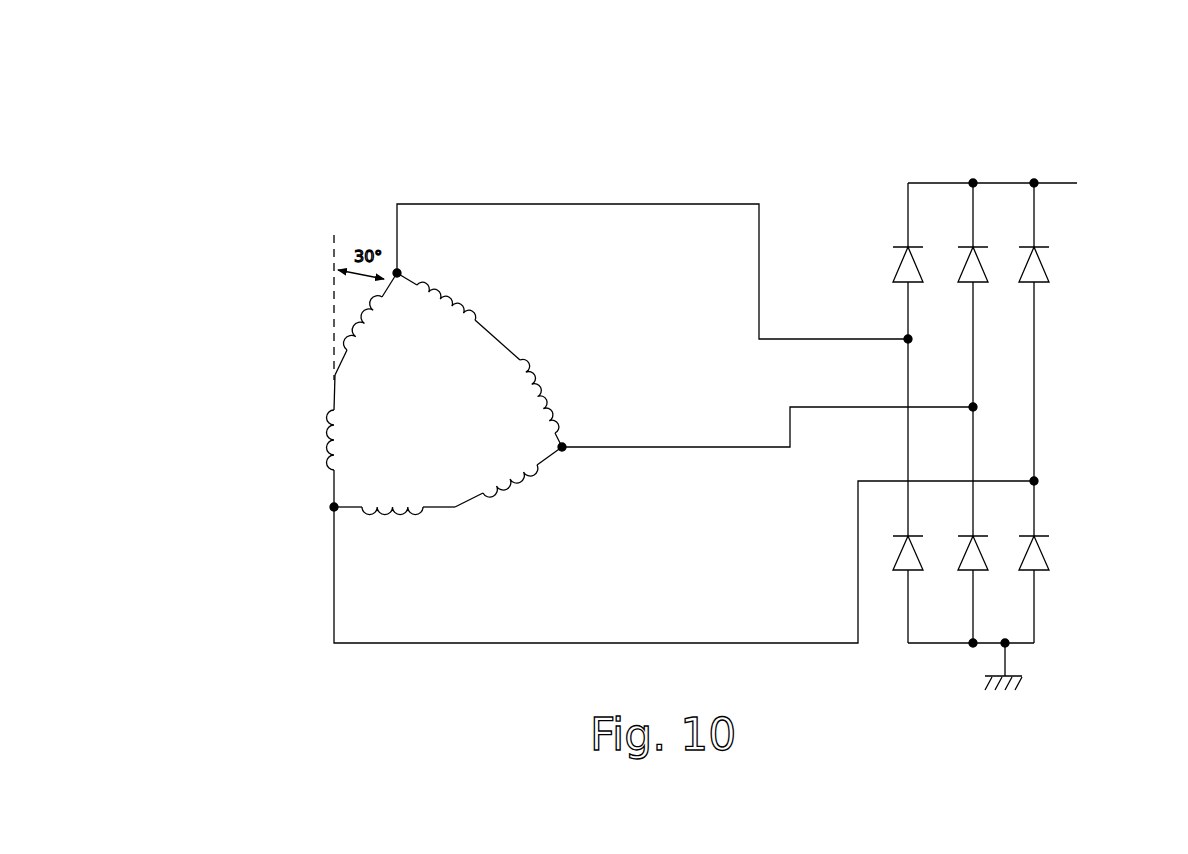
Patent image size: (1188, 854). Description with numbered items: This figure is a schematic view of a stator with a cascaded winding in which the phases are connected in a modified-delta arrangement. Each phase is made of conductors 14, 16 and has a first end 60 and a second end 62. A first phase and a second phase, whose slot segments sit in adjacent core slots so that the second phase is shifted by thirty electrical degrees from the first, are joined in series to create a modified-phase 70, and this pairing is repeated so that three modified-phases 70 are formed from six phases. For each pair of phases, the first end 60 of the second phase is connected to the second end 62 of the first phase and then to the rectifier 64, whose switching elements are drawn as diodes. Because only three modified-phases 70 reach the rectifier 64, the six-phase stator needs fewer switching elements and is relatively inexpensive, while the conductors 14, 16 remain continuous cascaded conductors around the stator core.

The conductor 14 is at (446, 442).
The conductor 16 is at (463, 305).
The first end 60 is at (397, 273).
The second end 62 is at (487, 327).
The rectifier 64 is at (1017, 180).
The modified-phase 70 is at (449, 283).